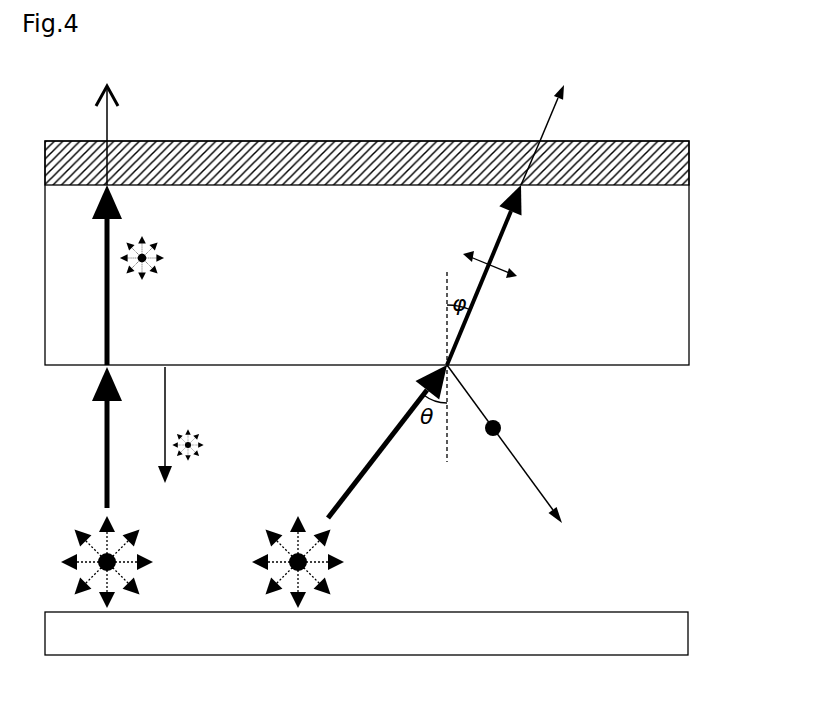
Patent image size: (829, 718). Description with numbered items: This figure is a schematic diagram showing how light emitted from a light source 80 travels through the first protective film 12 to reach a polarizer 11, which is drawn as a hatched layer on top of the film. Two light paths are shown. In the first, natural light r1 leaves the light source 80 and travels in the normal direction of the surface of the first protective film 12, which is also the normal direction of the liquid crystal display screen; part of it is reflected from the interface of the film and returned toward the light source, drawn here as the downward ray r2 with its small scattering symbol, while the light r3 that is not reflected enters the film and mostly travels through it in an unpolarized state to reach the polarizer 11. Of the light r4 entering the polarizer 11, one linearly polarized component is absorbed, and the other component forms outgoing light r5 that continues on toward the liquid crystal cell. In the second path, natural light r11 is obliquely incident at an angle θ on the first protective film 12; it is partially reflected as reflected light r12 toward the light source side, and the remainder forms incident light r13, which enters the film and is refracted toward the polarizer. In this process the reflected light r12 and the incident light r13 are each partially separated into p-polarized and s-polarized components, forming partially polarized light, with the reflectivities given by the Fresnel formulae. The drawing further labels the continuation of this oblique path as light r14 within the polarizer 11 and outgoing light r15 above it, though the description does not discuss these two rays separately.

The polarizer 11 is at (689, 163).
The first protective film 12 is at (678, 272).
The light source 80 is at (673, 632).
The natural light r1 is at (107, 487).
The scattered light ray r2 is at (182, 425).
The light entering the first protective film r3 is at (116, 275).
The light entering the polarizer r4 is at (88, 163).
The outgoing light r5 is at (94, 113).
The natural light obliquely incident r11 is at (349, 486).
The reflected light r12 is at (506, 444).
The incident light r13 is at (504, 275).
The light ray in reflective layer r14 is at (505, 163).
The emitted light ray r15 is at (530, 113).